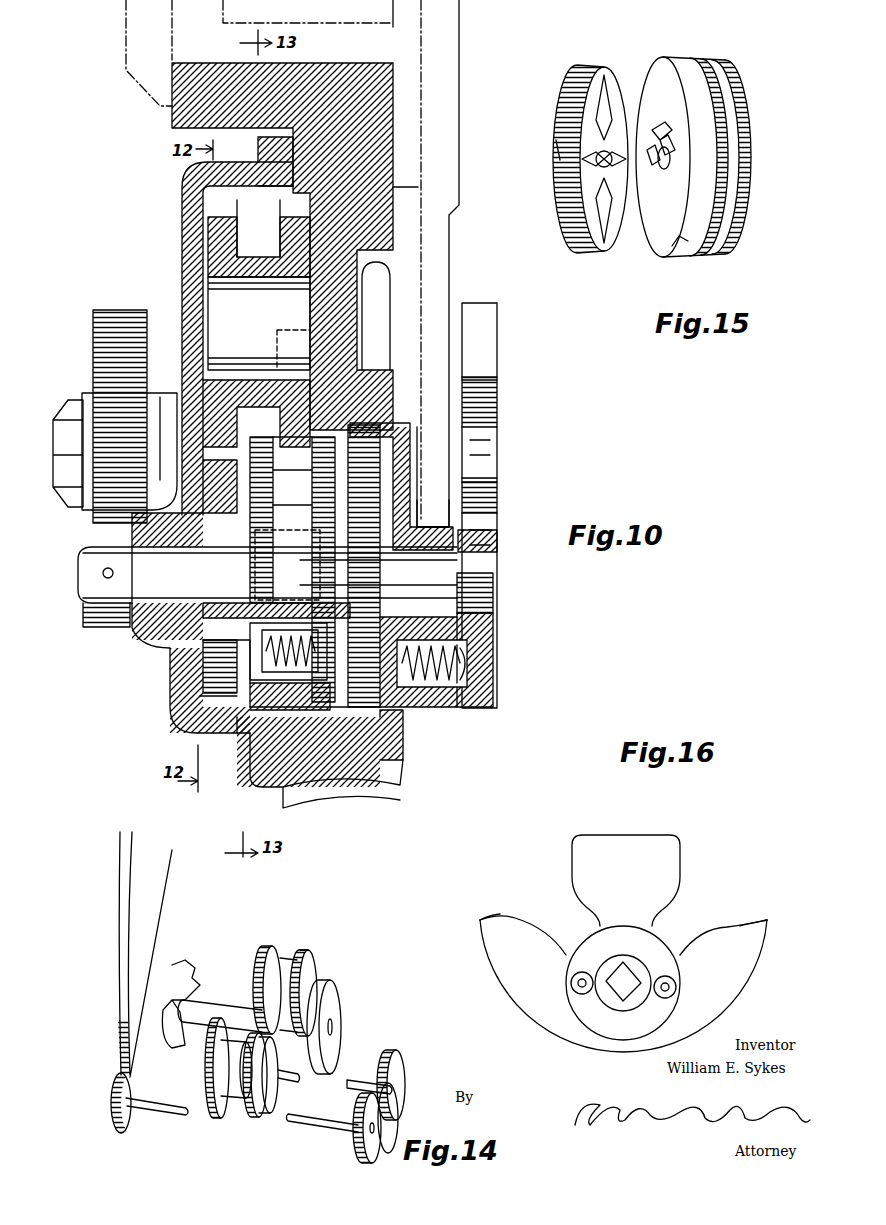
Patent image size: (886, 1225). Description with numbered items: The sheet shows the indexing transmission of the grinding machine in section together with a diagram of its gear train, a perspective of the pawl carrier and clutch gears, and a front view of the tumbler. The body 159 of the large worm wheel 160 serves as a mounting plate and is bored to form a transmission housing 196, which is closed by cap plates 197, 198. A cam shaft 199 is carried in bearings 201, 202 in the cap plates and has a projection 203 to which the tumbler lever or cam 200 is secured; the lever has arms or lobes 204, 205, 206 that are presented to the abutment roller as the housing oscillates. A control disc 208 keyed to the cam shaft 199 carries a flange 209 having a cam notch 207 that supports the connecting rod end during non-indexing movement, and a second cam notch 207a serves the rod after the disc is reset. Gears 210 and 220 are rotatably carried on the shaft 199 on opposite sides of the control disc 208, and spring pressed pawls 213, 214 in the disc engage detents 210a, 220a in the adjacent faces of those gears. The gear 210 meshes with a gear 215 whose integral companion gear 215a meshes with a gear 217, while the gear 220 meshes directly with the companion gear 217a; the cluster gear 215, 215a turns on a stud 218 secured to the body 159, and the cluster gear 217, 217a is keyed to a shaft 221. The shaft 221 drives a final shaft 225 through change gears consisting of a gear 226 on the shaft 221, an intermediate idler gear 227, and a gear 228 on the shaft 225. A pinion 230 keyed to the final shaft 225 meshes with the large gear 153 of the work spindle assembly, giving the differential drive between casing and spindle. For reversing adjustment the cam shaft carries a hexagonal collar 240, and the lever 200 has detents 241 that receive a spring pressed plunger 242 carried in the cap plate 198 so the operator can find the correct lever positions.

In FIG. 10, the gear 153 is at (455, 284).
In FIG. 14, the gear 153 is at (152, 918).
In FIG. 10, the worm wheel body 159 is at (362, 92).
In FIG. 10, the worm wheel 160 is at (320, 805).
In FIG. 10, the transmission housing 196 is at (235, 186).
In FIG. 10, the cap plate 197 is at (182, 200).
In FIG. 10, the cap plate 198 is at (400, 748).
In FIG. 10, the cam shaft 199 is at (425, 567).
In FIG. 14, the cam shaft 199 is at (252, 958).
In FIG. 10, the tumbler lever 200 is at (497, 395).
In FIG. 16, the tumbler lever 200 is at (681, 906).
In FIG. 14, the tumbler lever 200 is at (192, 976).
In FIG. 10, the bearing 201 is at (155, 640).
In FIG. 10, the bearing 202 is at (497, 625).
In FIG. 10, the projection 203 is at (497, 600).
In FIG. 16, the arm 204 is at (758, 924).
In FIG. 16, the arm 205 is at (652, 855).
In FIG. 16, the arm 206 is at (480, 918).
In FIG. 15, the cam notch 207 is at (700, 70).
In FIG. 15, the second cam notch 207a is at (687, 286).
In FIG. 10, the control disc 208 is at (300, 530).
In FIG. 15, the control disc 208 is at (712, 125).
In FIG. 15, the flange 209 is at (700, 190).
In FIG. 10, the gear 210 is at (205, 690).
In FIG. 15, the gear 210 is at (577, 254).
In FIG. 14, the gear 210 is at (339, 993).
In FIG. 10, the detent 210a is at (165, 655).
In FIG. 15, the detent 210a is at (572, 205).
In FIG. 10, the spring pressed pawl 213 is at (262, 685).
In FIG. 15, the spring pressed pawl 213 is at (680, 150).
In FIG. 10, the spring pressed pawl 214 is at (437, 513).
In FIG. 10, the gear 215 is at (222, 232).
In FIG. 14, the gear 215 is at (322, 977).
In FIG. 10, the companion gear 215a is at (282, 238).
In FIG. 14, the companion gear 215a is at (300, 950).
In FIG. 14, the gear 217 is at (255, 1119).
In FIG. 14, the companion gear 217a is at (213, 1120).
In FIG. 10, the stud 218 is at (215, 295).
In FIG. 10, the gear 220 is at (410, 720).
In FIG. 14, the gear 220 is at (287, 947).
In FIG. 10, the detent 220a is at (335, 497).
In FIG. 14, the shaft 221 is at (353, 1073).
In FIG. 14, the final shaft 225 is at (155, 1117).
In FIG. 10, the gear 226 is at (108, 312).
In FIG. 14, the gear 226 is at (407, 1060).
In FIG. 14, the idler gear 227 is at (393, 1093).
In FIG. 14, the gear 228 is at (370, 1113).
In FIG. 14, the pinion 230 is at (112, 1098).
In FIG. 10, the hexagonal collar 240 is at (108, 627).
In FIG. 10, the detents 241 is at (497, 648).
In FIG. 16, the detents 241 is at (672, 992).
In FIG. 10, the spring pressed plunger 242 is at (476, 675).